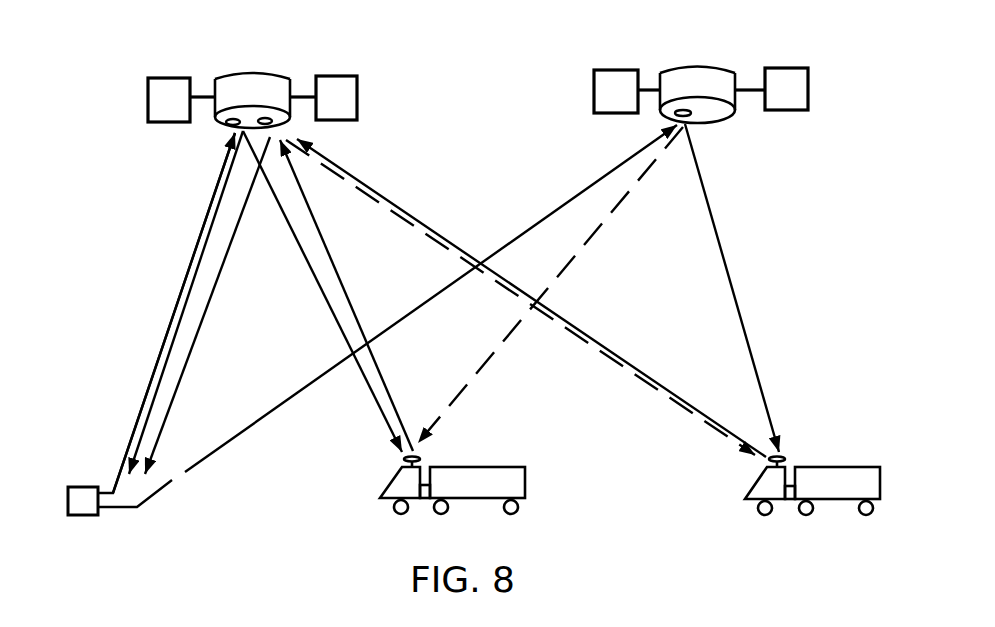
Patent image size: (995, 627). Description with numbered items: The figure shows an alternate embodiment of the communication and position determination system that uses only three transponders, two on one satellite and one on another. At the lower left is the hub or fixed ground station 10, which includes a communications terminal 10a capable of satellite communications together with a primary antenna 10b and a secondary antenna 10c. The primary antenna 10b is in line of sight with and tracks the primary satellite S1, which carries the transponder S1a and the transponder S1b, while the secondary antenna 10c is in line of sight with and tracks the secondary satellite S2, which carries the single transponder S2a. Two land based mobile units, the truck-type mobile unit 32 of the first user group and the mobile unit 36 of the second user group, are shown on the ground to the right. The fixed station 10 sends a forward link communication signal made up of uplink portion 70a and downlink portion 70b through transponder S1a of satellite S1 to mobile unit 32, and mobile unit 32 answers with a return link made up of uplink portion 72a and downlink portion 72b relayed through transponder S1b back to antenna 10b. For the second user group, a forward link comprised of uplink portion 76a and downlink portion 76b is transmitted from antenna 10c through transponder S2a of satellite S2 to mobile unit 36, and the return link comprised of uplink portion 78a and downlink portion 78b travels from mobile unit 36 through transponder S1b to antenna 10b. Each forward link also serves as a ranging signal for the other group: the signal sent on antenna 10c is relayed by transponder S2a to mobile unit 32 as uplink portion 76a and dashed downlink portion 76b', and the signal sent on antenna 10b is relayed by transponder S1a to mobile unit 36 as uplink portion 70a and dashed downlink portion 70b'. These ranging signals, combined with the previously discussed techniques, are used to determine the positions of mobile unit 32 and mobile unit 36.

The primary satellite S1 is at (269, 73).
The transponder S1a is at (225, 121).
The transponder S1b is at (286, 123).
The secondary satellite S2 is at (713, 63).
The transponder S2a is at (663, 112).
The fixed ground station 10 is at (67, 492).
The communications terminal 10a is at (80, 516).
The primary antenna 10b is at (137, 482).
The secondary antenna 10c is at (148, 479).
The mobile unit 32 is at (497, 466).
The mobile unit 36 is at (817, 467).
The uplink portion 70a is at (190, 258).
The downlink portion 70b is at (329, 295).
The downlink portion 70b' is at (520, 297).
The uplink portion 72a is at (347, 293).
The downlink portion 72b is at (178, 345).
The uplink portion 76a is at (260, 423).
The downlink portion 76b is at (744, 288).
The downlink portion 76b' is at (550, 285).
The uplink portion 78a is at (603, 339).
The downlink portion 78b is at (178, 387).